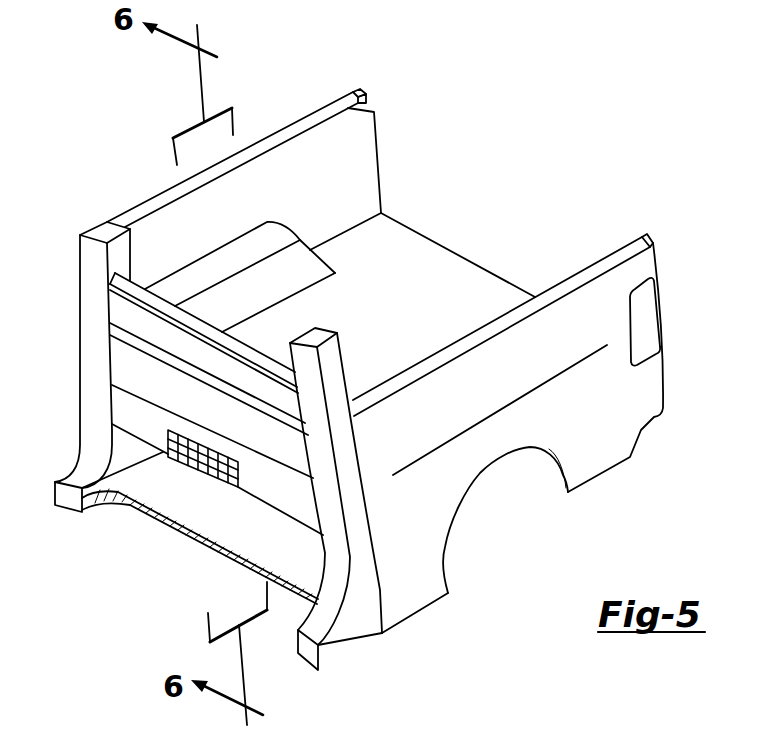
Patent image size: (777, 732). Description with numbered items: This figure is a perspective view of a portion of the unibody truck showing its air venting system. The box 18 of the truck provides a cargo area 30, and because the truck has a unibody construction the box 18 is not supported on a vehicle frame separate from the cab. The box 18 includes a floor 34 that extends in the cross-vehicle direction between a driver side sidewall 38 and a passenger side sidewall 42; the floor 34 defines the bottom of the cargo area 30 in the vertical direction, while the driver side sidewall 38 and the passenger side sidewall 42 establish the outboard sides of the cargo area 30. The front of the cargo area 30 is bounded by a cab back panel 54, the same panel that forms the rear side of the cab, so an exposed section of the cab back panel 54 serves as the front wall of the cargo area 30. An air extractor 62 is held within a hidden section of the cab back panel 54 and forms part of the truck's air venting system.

The box 18 is at (595, 452).
The cargo area 30 is at (443, 219).
The floor 34 is at (460, 287).
The driver side sidewall 38 is at (620, 257).
The passenger side sidewall 42 is at (348, 95).
The cab back panel 54 is at (128, 363).
The air extractor 62 is at (197, 462).